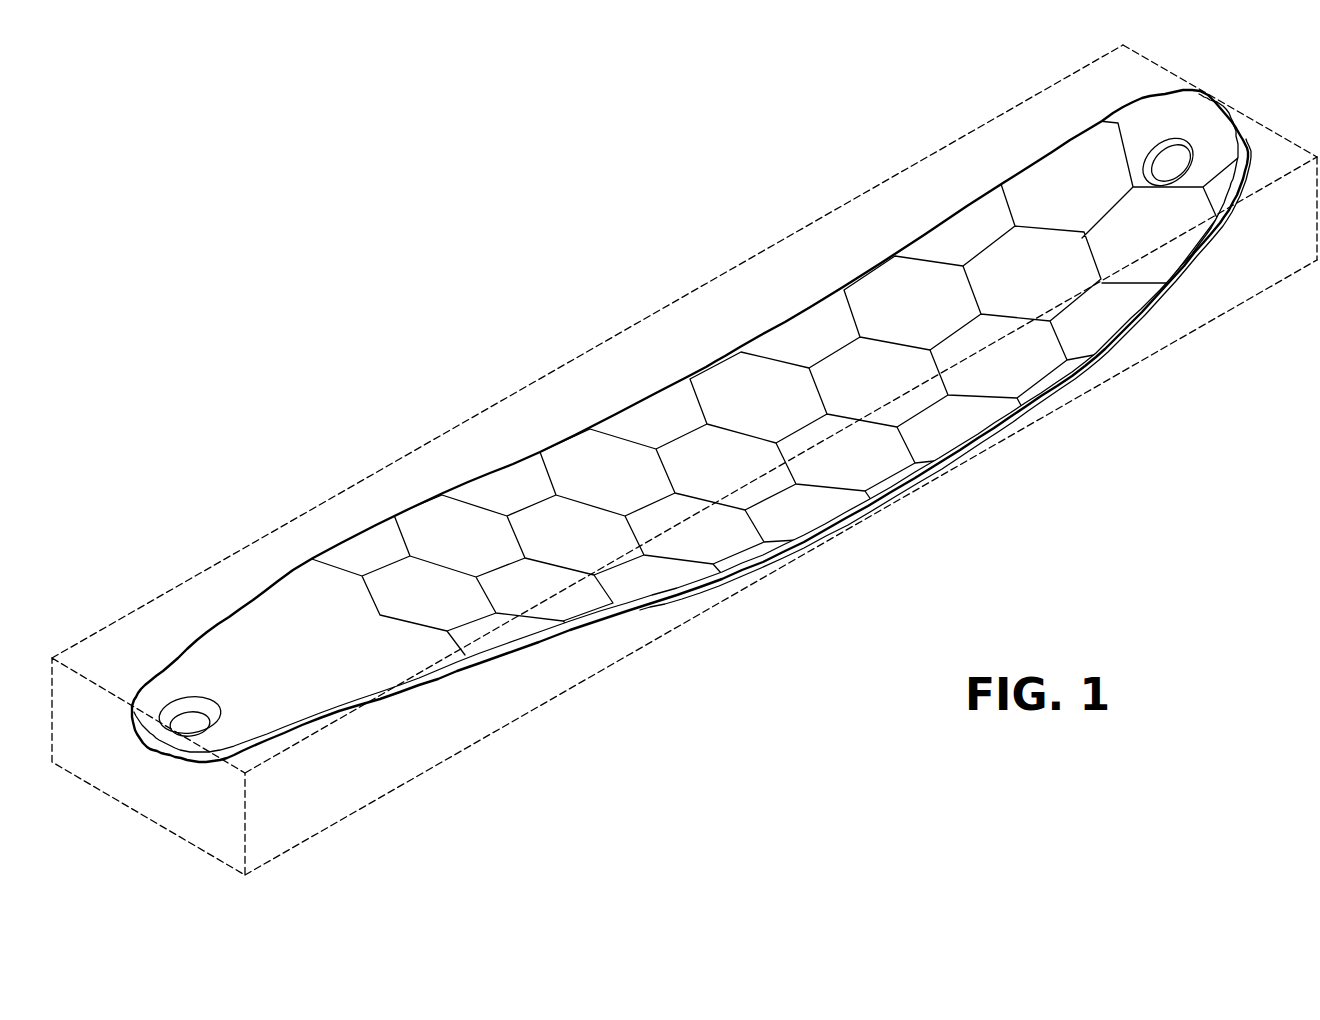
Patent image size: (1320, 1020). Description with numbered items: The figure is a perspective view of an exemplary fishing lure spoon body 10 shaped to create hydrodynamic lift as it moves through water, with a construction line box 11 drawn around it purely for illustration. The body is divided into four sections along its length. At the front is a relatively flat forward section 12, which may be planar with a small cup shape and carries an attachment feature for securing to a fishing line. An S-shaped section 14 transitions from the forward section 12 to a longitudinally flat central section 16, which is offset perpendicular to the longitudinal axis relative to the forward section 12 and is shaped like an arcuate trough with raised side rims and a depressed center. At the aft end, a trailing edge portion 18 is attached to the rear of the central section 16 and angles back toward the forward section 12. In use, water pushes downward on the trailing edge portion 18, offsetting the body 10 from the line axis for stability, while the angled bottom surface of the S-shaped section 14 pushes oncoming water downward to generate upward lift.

The fishing lure spoon body 10 is at (408, 163).
The construction line box 11 is at (1080, 397).
The relatively flat forward section 12 is at (207, 632).
The S-shaped section 14 is at (497, 470).
The longitudinally flat central section 16 is at (805, 305).
The trailing edge portion 18 is at (1040, 158).